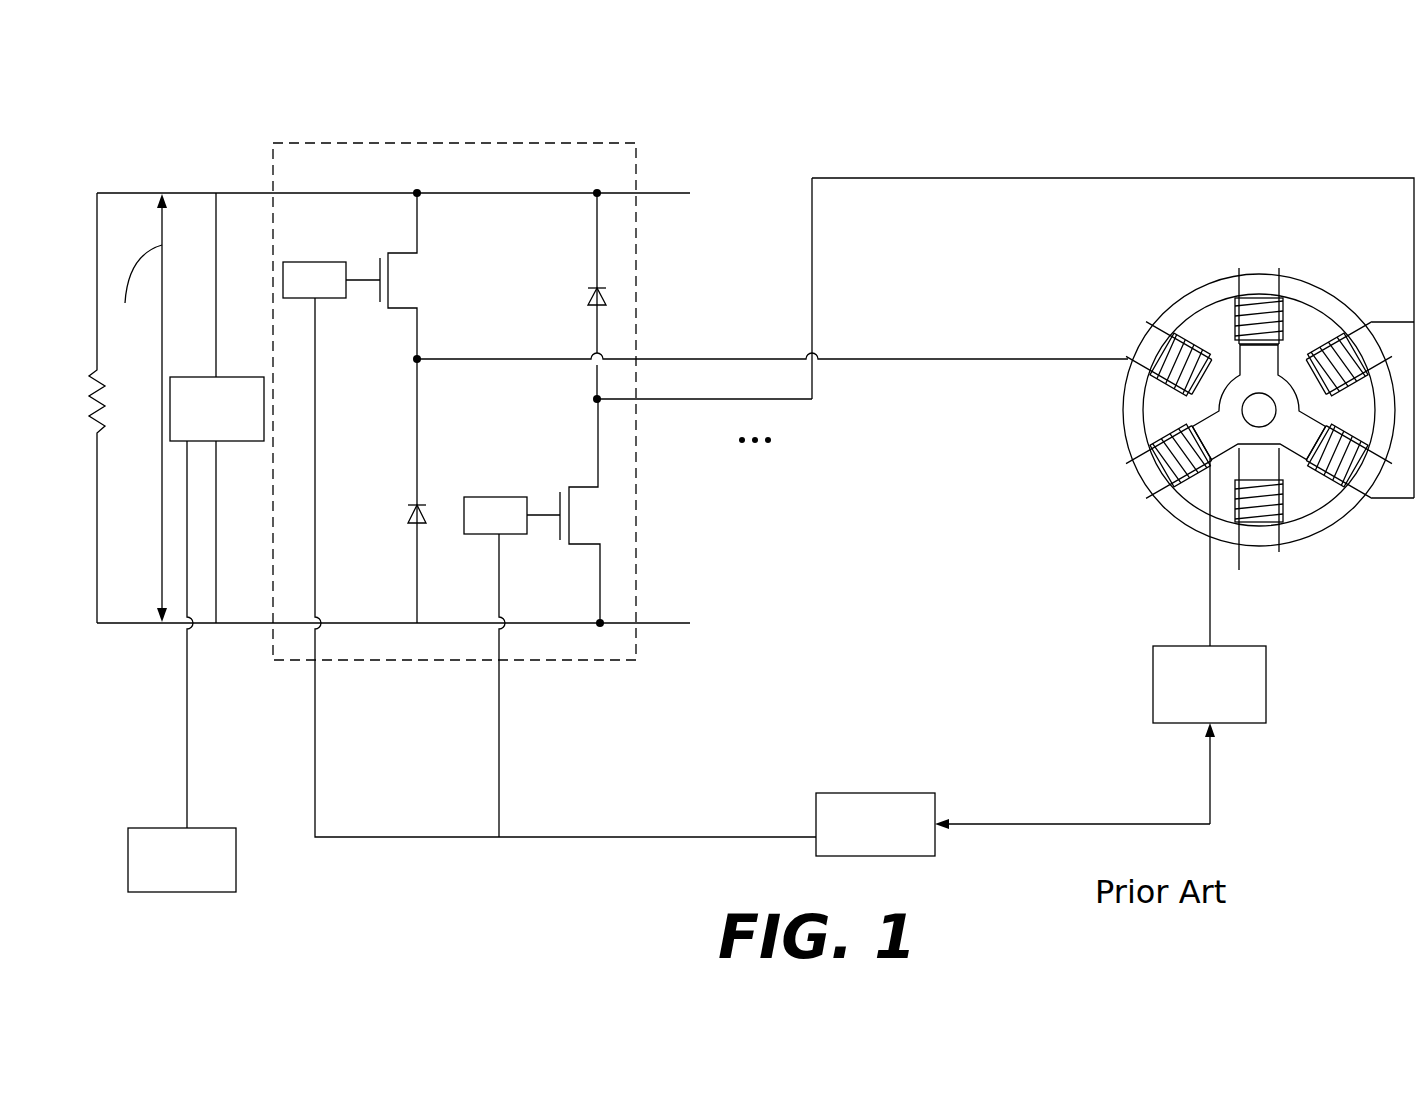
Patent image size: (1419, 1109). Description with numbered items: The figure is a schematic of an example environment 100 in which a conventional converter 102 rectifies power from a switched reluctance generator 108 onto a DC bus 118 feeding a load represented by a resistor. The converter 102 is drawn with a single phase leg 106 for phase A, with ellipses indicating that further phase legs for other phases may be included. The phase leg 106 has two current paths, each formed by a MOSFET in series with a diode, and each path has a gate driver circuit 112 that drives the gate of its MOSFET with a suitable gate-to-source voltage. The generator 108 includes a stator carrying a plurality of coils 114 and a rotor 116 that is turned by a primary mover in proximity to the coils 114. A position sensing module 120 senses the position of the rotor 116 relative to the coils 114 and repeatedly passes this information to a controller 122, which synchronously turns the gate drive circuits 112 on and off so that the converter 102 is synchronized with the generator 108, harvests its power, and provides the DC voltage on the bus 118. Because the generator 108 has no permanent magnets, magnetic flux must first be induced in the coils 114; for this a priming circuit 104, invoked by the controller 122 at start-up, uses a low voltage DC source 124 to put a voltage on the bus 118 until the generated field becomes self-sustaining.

The environment 100 is at (1259, 100).
The converter 102 is at (362, 104).
The priming circuit 104 is at (233, 377).
The phase leg 106 is at (499, 134).
The SR generator 108 is at (1130, 326).
The gate driver circuit 112 is at (296, 294).
The coils 114 is at (1295, 318).
The rotor 116 is at (1263, 412).
The bus 118 is at (240, 193).
The position sensing module 120 is at (1264, 703).
The controller 122 is at (862, 792).
The low voltage DC source 124 is at (212, 893).